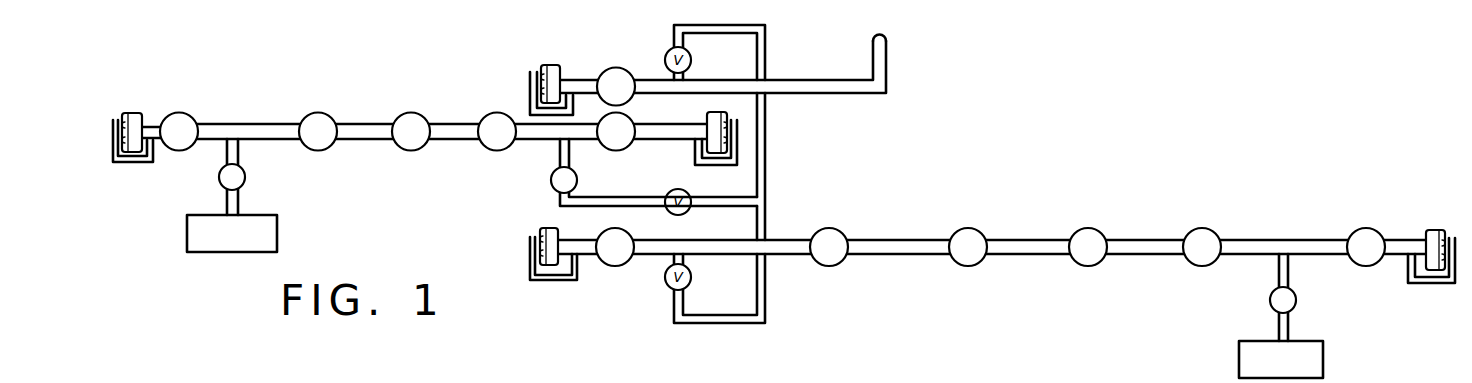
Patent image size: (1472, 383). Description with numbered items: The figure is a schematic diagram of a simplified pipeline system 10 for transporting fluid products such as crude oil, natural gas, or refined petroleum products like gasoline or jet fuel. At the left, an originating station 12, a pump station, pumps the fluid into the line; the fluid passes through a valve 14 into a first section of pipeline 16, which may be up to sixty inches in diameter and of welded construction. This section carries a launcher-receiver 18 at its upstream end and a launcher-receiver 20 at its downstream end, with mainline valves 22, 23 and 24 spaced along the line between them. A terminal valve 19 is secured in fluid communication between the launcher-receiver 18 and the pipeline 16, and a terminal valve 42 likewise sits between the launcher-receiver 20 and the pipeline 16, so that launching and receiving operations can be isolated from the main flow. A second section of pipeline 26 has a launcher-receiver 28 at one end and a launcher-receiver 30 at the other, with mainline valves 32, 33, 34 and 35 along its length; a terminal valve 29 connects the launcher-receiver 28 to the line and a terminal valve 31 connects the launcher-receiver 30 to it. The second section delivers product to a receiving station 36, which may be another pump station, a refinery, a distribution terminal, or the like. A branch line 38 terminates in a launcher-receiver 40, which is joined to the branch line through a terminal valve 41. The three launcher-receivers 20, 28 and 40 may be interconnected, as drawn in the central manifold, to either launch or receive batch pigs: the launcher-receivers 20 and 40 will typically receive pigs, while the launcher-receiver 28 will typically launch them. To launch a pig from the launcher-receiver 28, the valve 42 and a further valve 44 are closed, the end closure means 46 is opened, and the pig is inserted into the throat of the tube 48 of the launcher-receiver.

The pipeline system 10 is at (371, 71).
The originating station 12 is at (278, 240).
The valve 14 is at (246, 178).
The section of pipeline 16 is at (366, 141).
The launcher-receiver 18 is at (128, 112).
The terminal valve 19 is at (187, 151).
The launcher-receiver 20 is at (712, 112).
The mainline valve 22 is at (331, 114).
The mainline valve 23 is at (423, 114).
The mainline valve 24 is at (483, 146).
The second section of pipeline 26 is at (1025, 256).
The launcher-receiver 28 is at (543, 228).
The terminal valve 29 is at (603, 233).
The launcher-receiver 30 is at (1443, 230).
The terminal valve 31 is at (1371, 230).
The mainline valve 32 is at (841, 230).
The mainline valve 33 is at (978, 230).
The mainline valve 34 is at (1094, 230).
The mainline valve 35 is at (1210, 230).
The receiving station 36 is at (1257, 341).
The branch line 38 is at (887, 60).
The launcher-receiver 40 is at (547, 65).
The terminal valve 41 is at (631, 70).
The terminal valve 42 is at (619, 152).
The valve 44 is at (551, 180).
The end closure means 46 is at (742, 145).
The tube 48 is at (669, 141).